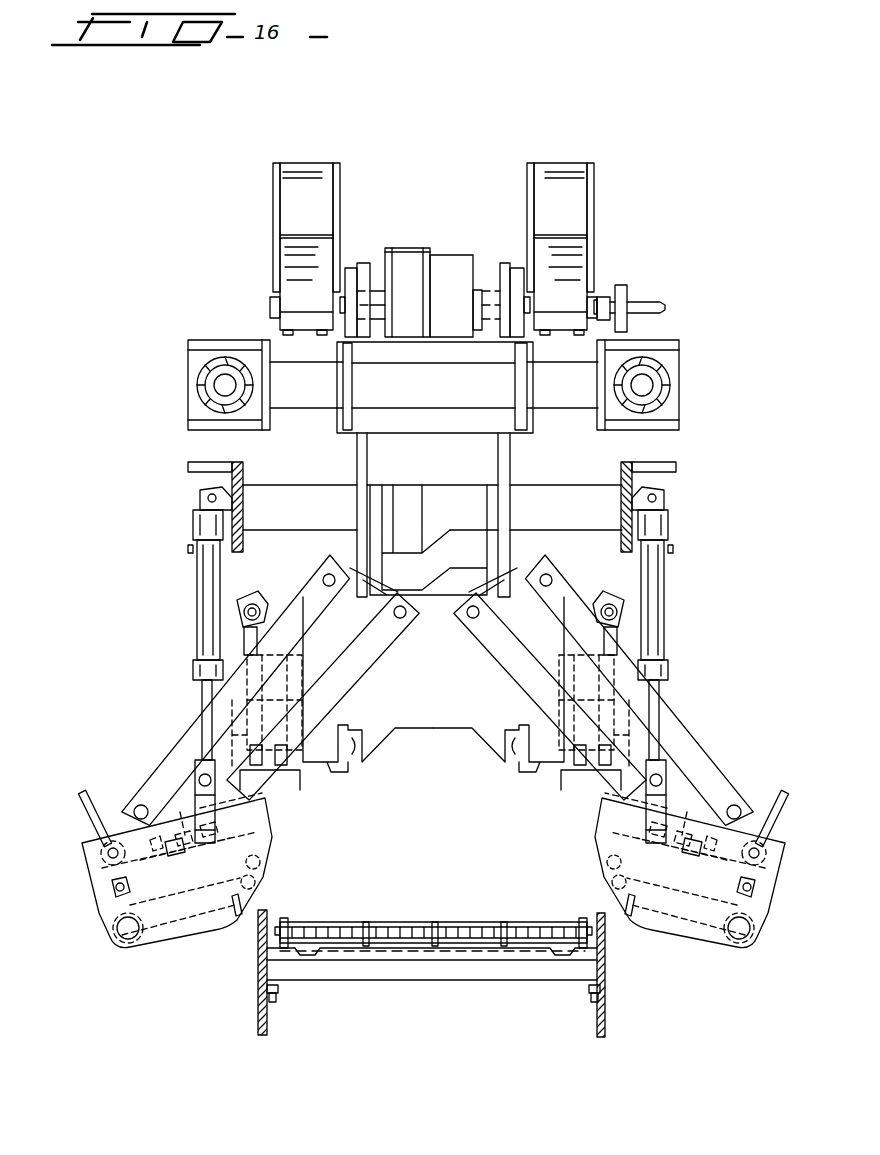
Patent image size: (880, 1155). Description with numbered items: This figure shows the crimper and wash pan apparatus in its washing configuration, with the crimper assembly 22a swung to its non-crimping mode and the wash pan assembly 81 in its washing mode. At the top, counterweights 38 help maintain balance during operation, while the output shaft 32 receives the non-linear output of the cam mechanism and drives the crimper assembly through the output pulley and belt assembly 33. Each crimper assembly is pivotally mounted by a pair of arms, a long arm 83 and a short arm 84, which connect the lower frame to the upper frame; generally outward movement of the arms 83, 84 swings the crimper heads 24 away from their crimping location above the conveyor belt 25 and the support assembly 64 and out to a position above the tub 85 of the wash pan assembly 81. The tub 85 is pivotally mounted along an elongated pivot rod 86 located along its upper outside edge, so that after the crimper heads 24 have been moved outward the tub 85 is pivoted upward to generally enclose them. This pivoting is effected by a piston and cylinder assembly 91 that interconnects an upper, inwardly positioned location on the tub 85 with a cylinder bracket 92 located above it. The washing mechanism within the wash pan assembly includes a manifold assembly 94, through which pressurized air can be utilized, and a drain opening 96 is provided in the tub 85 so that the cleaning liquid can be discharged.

The counterweights 38 is at (320, 205).
The output pulley and belt assembly 33 is at (400, 262).
The output shaft 32 is at (643, 302).
The cylinder bracket 92 is at (205, 497).
The piston and cylinder assembly 91 is at (205, 583).
The long arm 83 is at (205, 716).
The short arm 84 is at (352, 652).
The crimper assembly 22a is at (122, 773).
The wash pan assembly 81 is at (422, 860).
The pivot rod 86 is at (108, 853).
The tub 85 is at (98, 907).
The drain opening 96 is at (122, 943).
The manifold assembly 94 is at (258, 884).
The crimper heads 24 is at (268, 823).
The conveyor belt 25 is at (430, 922).
The support assembly 64 is at (385, 985).